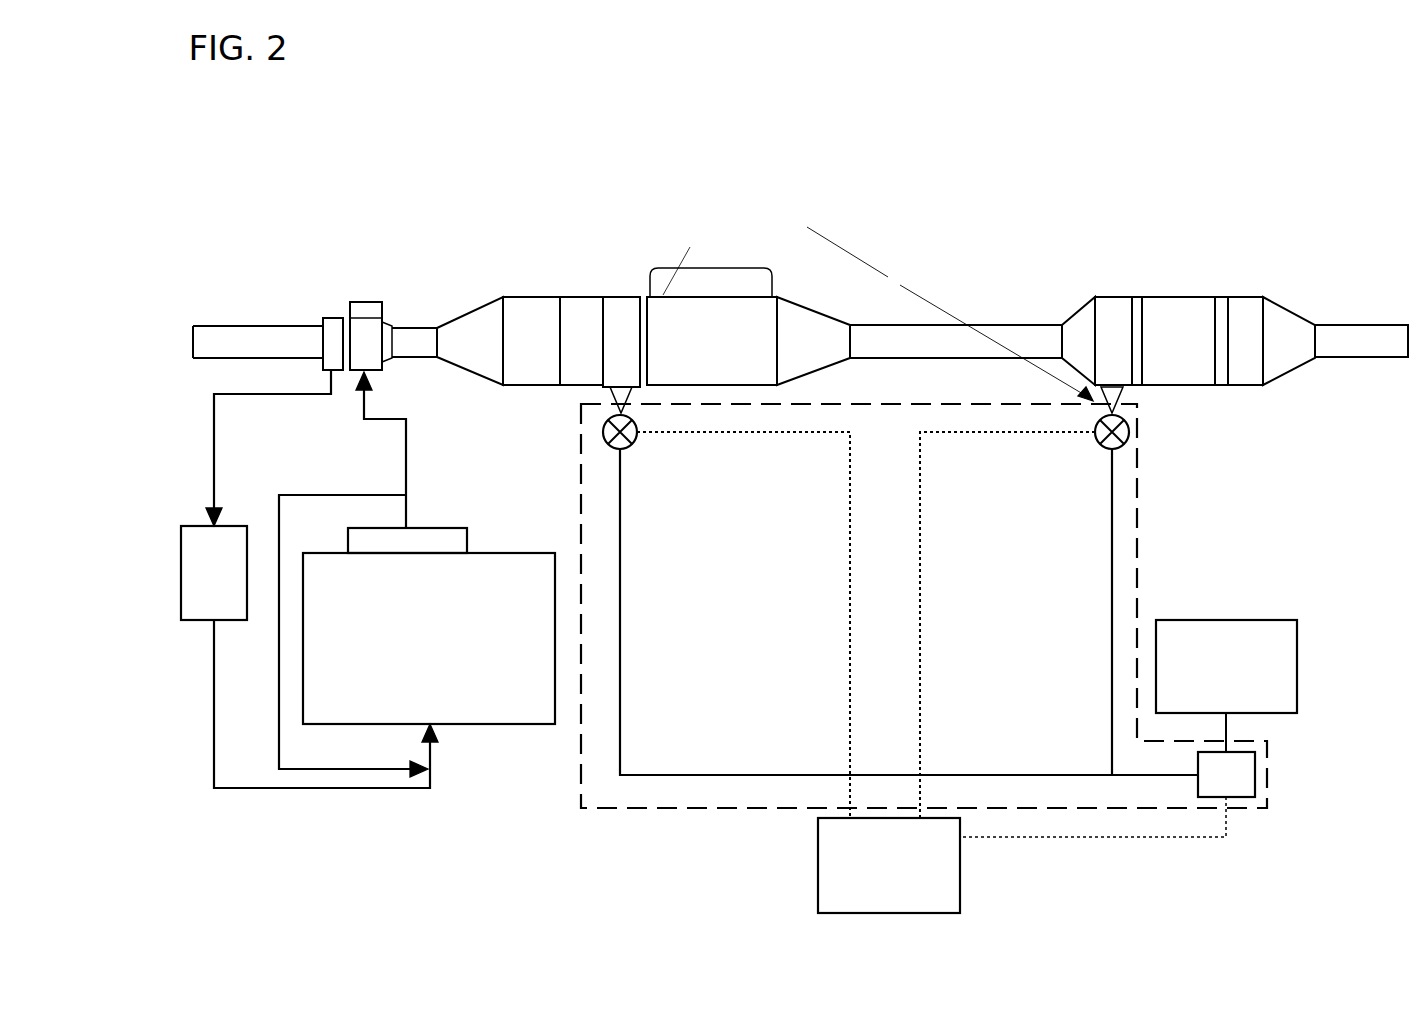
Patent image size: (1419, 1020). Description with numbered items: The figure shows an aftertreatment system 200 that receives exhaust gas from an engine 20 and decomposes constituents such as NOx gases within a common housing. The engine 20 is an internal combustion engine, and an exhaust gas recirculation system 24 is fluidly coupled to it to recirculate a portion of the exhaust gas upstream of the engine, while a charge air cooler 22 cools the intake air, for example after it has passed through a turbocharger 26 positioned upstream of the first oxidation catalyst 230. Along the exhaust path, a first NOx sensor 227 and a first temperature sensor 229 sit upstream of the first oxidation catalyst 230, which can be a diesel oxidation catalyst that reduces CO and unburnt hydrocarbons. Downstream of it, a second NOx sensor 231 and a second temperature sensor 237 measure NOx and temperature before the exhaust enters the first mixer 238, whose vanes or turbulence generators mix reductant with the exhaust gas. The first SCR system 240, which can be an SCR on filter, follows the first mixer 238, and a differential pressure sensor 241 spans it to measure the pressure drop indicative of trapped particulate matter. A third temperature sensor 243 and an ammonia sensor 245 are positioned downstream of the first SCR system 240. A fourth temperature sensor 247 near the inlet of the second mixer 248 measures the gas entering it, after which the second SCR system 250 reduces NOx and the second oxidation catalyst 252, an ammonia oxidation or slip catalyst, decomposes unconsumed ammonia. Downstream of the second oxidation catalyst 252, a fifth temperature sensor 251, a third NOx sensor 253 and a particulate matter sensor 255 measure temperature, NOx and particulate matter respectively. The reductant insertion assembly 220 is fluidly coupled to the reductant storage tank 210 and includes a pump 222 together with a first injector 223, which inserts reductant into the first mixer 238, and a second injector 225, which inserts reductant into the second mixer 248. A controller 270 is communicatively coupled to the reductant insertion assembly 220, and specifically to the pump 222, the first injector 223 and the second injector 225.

The aftertreatment system 200 is at (1186, 196).
The engine 20 is at (490, 712).
The charge air cooler 22 is at (198, 600).
The exhaust gas recirculation system 24 is at (455, 538).
The turbocharger 26 is at (338, 320).
The first NOx sensor 227 is at (447, 317).
The first temperature sensor 229 is at (488, 298).
The first oxidation catalyst 230 is at (510, 376).
The second NOx sensor 231 is at (570, 297).
The second temperature sensor 237 is at (598, 297).
The first mixer 238 is at (633, 297).
The first SCR system 240 is at (760, 300).
The differential pressure sensor 241 is at (707, 268).
The third temperature sensor 243 is at (790, 300).
The ammonia sensor 245 is at (830, 306).
The fourth temperature sensor 247 is at (1086, 297).
The second mixer 248 is at (1112, 305).
The second SCR system 250 is at (1192, 375).
The second oxidation catalyst 252 is at (1250, 378).
The fifth temperature sensor 251 is at (1286, 297).
The third NOx sensor 253 is at (1332, 325).
The particulate matter sensor 255 is at (1380, 325).
The first injector 223 is at (625, 450).
The second injector 225 is at (1100, 447).
The reductant insertion assembly 220 is at (1152, 556).
The reductant storage tank 210 is at (1280, 667).
The pump 222 is at (1248, 778).
The controller 270 is at (960, 873).